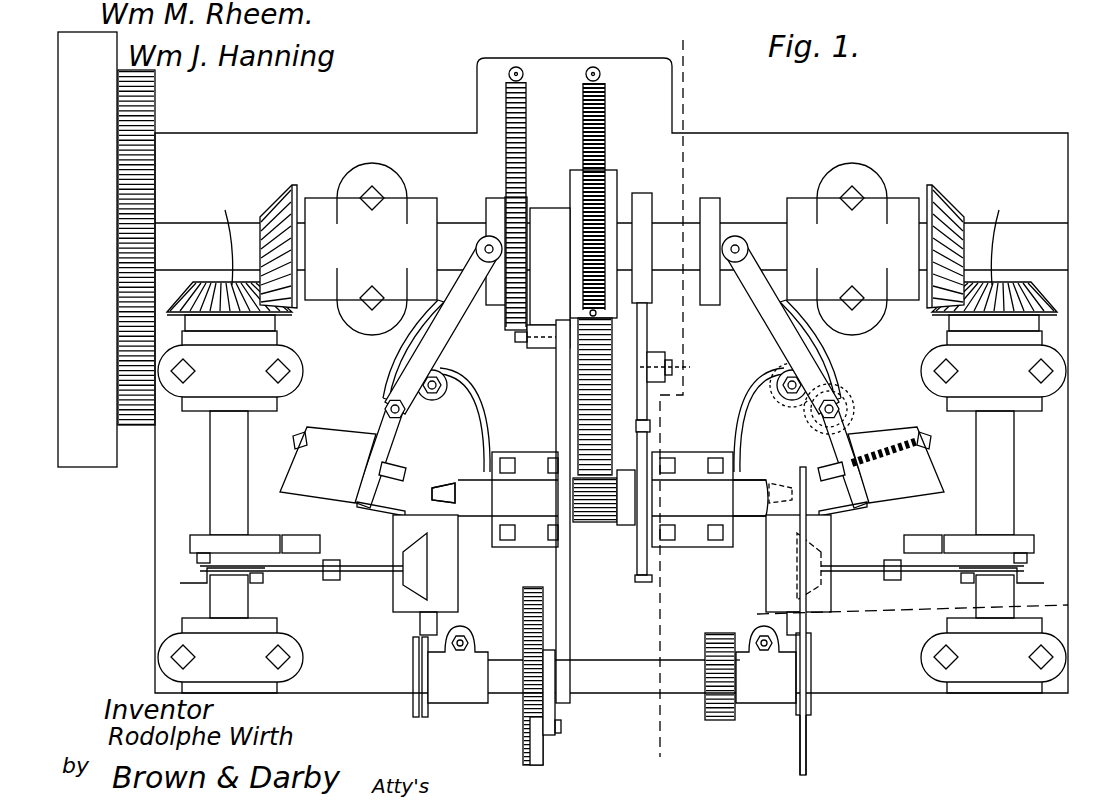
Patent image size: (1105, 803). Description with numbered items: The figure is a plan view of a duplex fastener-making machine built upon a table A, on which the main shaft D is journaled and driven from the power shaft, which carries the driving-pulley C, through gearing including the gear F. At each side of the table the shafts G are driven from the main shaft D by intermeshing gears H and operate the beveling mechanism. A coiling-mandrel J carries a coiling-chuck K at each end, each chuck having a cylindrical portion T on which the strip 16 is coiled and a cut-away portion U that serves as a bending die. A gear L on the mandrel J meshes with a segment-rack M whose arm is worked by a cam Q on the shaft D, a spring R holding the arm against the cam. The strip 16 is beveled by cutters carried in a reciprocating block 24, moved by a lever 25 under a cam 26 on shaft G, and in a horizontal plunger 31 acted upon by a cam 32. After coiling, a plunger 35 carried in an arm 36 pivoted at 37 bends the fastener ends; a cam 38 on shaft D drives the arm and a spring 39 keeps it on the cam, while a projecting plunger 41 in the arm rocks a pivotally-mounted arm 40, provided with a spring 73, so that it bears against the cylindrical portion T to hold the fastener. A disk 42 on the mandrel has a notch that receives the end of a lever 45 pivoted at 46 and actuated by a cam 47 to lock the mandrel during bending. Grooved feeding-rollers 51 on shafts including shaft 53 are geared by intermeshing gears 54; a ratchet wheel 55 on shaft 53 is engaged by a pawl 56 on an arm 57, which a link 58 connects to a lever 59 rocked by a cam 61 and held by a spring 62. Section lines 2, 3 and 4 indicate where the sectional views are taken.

The table A is at (995, 133).
The driving-pulley C is at (101, 467).
The gear F is at (156, 109).
The main shaft D is at (452, 237).
The shaft G is at (248, 465).
The intermeshing gears H is at (262, 211).
The cam 38 is at (497, 294).
The spring 62 is at (506, 160).
The cam Q is at (612, 187).
The spring R is at (604, 130).
The cam 61 is at (543, 268).
The cam 47 is at (642, 198).
The lever 59 is at (546, 350).
The rack M is at (588, 397).
The gear L is at (597, 523).
The link 58 is at (566, 617).
The lever 45 is at (644, 338).
The disk 42 is at (638, 577).
The pivot 46 is at (672, 369).
The spring 73 is at (743, 425).
The pivotally-mounted arm 40 is at (790, 403).
The spring 39 is at (404, 350).
The arm 36 is at (446, 346).
The plunger 35 is at (366, 512).
The projecting plunger 41 is at (380, 465).
The pivot 37 is at (385, 409).
The cylindrical portion T is at (428, 495).
The cut-away portion U is at (444, 492).
The coiling-chuck K is at (473, 485).
The coiling-mandrel J is at (751, 507).
The section line 2 is at (668, 407).
The reciprocating block 24 is at (415, 574).
The cam 32 is at (205, 535).
The slide or plunger 31 is at (315, 535).
The lever 25 is at (300, 575).
The cam 26 is at (197, 569).
The grooved feeding-rollers 51 is at (413, 705).
The shaft 53 is at (614, 671).
The ratchet disk or wheel 55 is at (525, 590).
The pawl 56 is at (543, 750).
The arm 57 is at (556, 710).
The section line 4 is at (818, 654).
The strip 16 is at (807, 748).
The intermeshing gears 54 is at (721, 720).
The section line 3 is at (1080, 606).